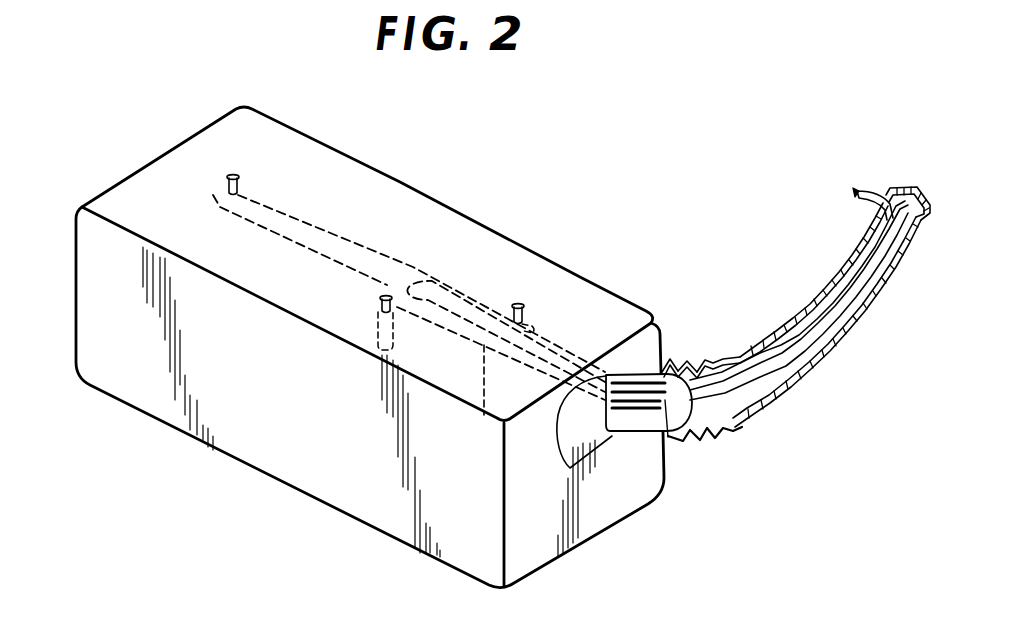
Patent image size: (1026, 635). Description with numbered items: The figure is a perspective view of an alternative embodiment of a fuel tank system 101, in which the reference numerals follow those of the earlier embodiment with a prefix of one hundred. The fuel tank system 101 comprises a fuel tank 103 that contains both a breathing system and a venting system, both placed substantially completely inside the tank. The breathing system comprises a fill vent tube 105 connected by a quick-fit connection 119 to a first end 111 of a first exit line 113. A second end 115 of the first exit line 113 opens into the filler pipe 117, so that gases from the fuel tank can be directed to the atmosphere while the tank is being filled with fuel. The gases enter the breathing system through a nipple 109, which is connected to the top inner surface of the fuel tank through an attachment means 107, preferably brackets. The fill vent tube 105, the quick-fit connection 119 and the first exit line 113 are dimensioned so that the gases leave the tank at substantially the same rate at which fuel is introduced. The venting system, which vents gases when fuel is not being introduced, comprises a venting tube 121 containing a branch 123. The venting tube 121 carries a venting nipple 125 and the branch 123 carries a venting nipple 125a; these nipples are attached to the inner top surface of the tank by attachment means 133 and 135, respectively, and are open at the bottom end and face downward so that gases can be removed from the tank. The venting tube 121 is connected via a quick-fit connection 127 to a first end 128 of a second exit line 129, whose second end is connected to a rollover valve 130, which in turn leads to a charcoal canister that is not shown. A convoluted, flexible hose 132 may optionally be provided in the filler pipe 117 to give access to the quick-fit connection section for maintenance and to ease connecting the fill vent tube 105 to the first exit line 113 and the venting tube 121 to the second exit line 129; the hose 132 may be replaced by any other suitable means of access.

The fuel tank system 101 is at (202, 122).
The fuel tank 103 is at (76, 273).
The fill vent tube 105 is at (483, 416).
The attachment means 107 is at (387, 296).
The nipple 109 is at (378, 355).
The first end of first exit line 111 is at (718, 440).
The first exit line 113 is at (850, 313).
The second end of first exit line 115 is at (907, 230).
The filler pipe 117 is at (805, 383).
The quick-fit connection 119 is at (670, 436).
The venting tube 121 is at (270, 207).
The branch 123 is at (470, 295).
The venting nipple 125 is at (213, 195).
The venting nipple 125a is at (535, 318).
The quick-fit connection 127 is at (668, 358).
The first end of second exit line 128 is at (712, 365).
The second exit line 129 is at (808, 306).
The rollover valve 130 is at (863, 190).
The convoluted flexible hose 132 is at (697, 358).
The attachment means 133 is at (237, 178).
The attachment means 135 is at (518, 304).